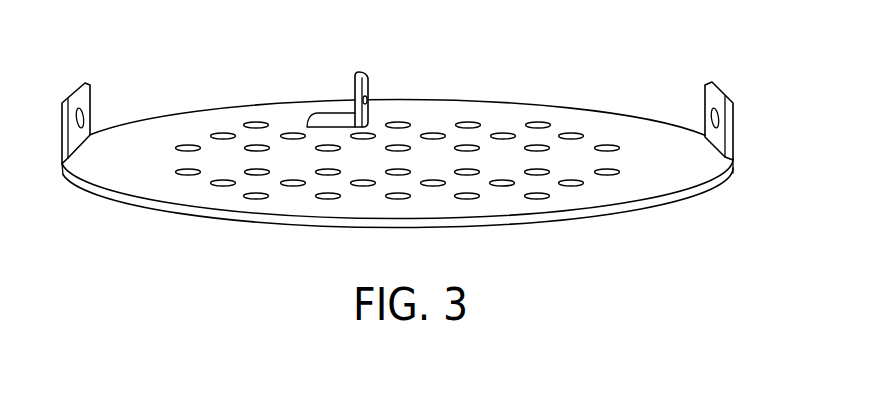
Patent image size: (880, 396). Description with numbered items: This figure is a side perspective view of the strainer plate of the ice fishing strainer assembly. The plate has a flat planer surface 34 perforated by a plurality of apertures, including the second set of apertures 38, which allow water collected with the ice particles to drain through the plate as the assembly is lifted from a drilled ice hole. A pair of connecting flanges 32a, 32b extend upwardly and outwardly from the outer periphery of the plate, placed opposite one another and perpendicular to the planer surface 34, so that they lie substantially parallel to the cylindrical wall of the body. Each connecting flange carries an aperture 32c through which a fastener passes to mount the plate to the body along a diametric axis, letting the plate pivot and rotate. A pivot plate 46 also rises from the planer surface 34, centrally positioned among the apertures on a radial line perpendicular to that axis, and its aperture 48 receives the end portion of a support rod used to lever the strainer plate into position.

The planer surface 34 is at (568, 118).
The second set of apertures 38 is at (546, 198).
The connecting flange 32a is at (85, 83).
The connecting flange 32b is at (733, 102).
The aperture of the connecting flange 32c is at (84, 117).
The pivot plate 46 is at (355, 82).
The aperture 48 is at (368, 96).